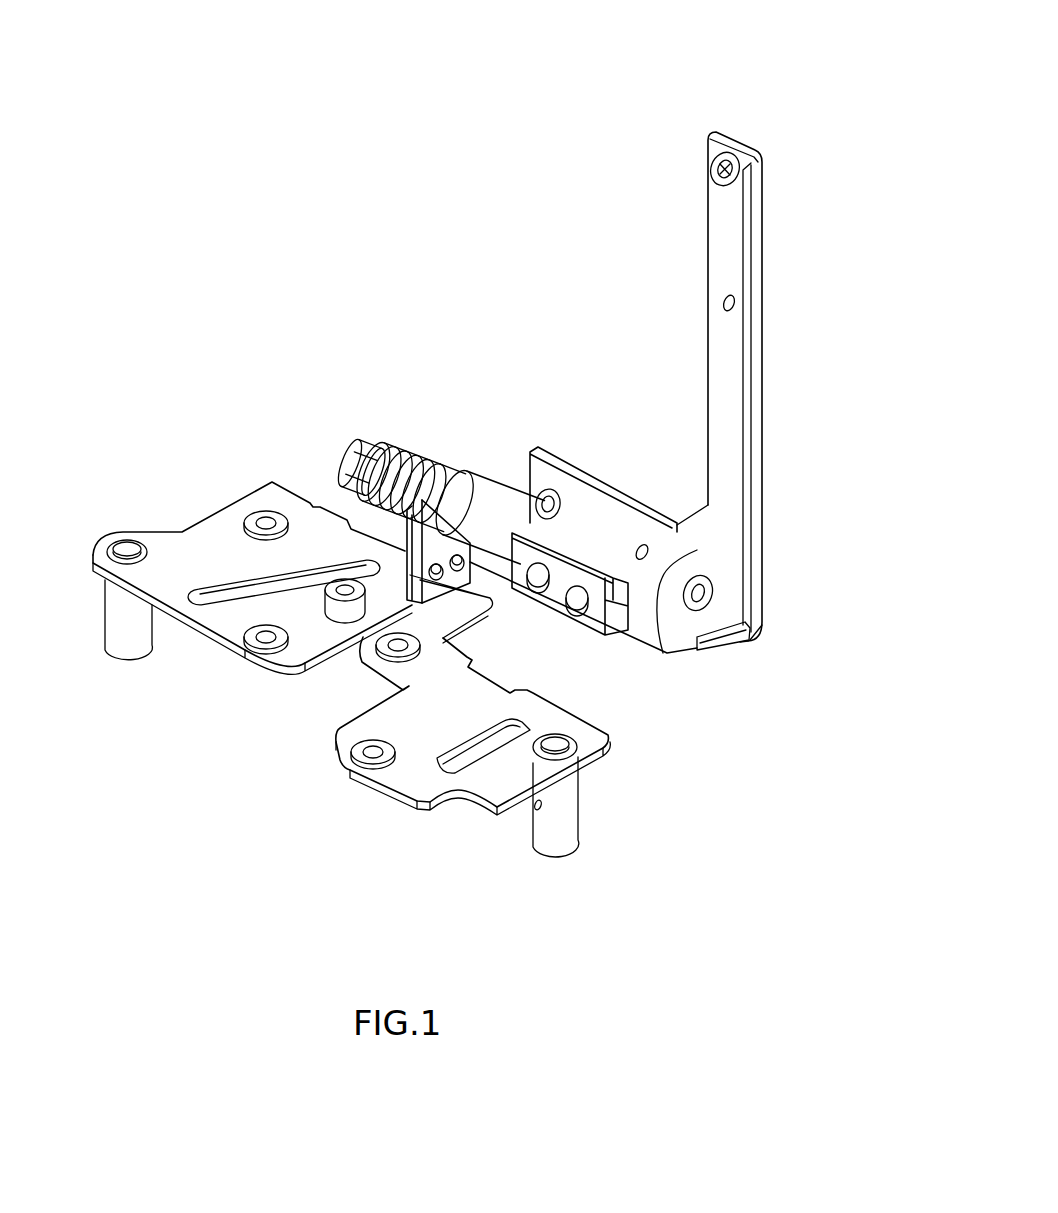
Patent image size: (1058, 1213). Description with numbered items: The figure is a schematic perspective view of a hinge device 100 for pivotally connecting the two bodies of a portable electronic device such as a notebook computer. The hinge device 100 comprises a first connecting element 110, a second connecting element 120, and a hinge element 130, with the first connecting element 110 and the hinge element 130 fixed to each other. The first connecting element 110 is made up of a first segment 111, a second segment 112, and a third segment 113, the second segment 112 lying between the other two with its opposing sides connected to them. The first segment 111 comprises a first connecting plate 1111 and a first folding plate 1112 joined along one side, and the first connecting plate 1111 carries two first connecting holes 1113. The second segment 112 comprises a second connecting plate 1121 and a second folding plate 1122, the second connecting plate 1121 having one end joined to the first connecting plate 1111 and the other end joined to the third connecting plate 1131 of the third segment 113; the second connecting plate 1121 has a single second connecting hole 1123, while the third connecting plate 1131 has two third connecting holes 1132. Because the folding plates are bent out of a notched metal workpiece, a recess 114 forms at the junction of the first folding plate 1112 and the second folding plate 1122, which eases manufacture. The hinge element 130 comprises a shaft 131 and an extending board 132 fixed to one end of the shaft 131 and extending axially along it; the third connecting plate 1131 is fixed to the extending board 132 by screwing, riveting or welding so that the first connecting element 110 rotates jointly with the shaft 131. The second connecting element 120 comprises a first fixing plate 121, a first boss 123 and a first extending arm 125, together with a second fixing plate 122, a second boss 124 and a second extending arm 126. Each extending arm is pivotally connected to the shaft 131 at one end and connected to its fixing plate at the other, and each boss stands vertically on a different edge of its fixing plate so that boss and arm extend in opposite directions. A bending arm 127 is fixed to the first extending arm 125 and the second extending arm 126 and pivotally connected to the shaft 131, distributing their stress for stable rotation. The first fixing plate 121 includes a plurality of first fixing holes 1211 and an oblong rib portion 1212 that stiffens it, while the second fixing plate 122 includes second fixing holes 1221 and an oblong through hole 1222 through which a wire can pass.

The hinge device 100 is at (115, 137).
The first connecting element 110 is at (583, 327).
The first segment 111 is at (612, 160).
The first connecting plate 1111 is at (730, 212).
The first folding plate 1112 is at (745, 262).
The first connecting holes 1113 is at (712, 170).
The second segment 112 is at (748, 773).
The second connecting plate 1121 is at (663, 657).
The second folding plate 1122 is at (720, 652).
The second connecting hole 1123 is at (696, 606).
The third segment 113 is at (682, 450).
The third connecting plate 1131 is at (535, 473).
The third connecting hole 1132 is at (548, 490).
The recess 114 is at (752, 645).
The second connecting element 120 is at (213, 476).
The first fixing plate 121 is at (225, 628).
The first fixing hole 1211 is at (262, 515).
The rib portion 1212 is at (205, 598).
The second fixing plate 122 is at (412, 782).
The second fixing hole 1221 is at (397, 650).
The through hole 1222 is at (460, 770).
The first boss 123 is at (110, 620).
The second boss 124 is at (550, 840).
The first extending arm 125 is at (383, 450).
The second extending arm 126 is at (440, 500).
The bending arm 127 is at (460, 530).
The hinge element 130 is at (355, 396).
The shaft 131 is at (422, 455).
The extending board 132 is at (560, 588).